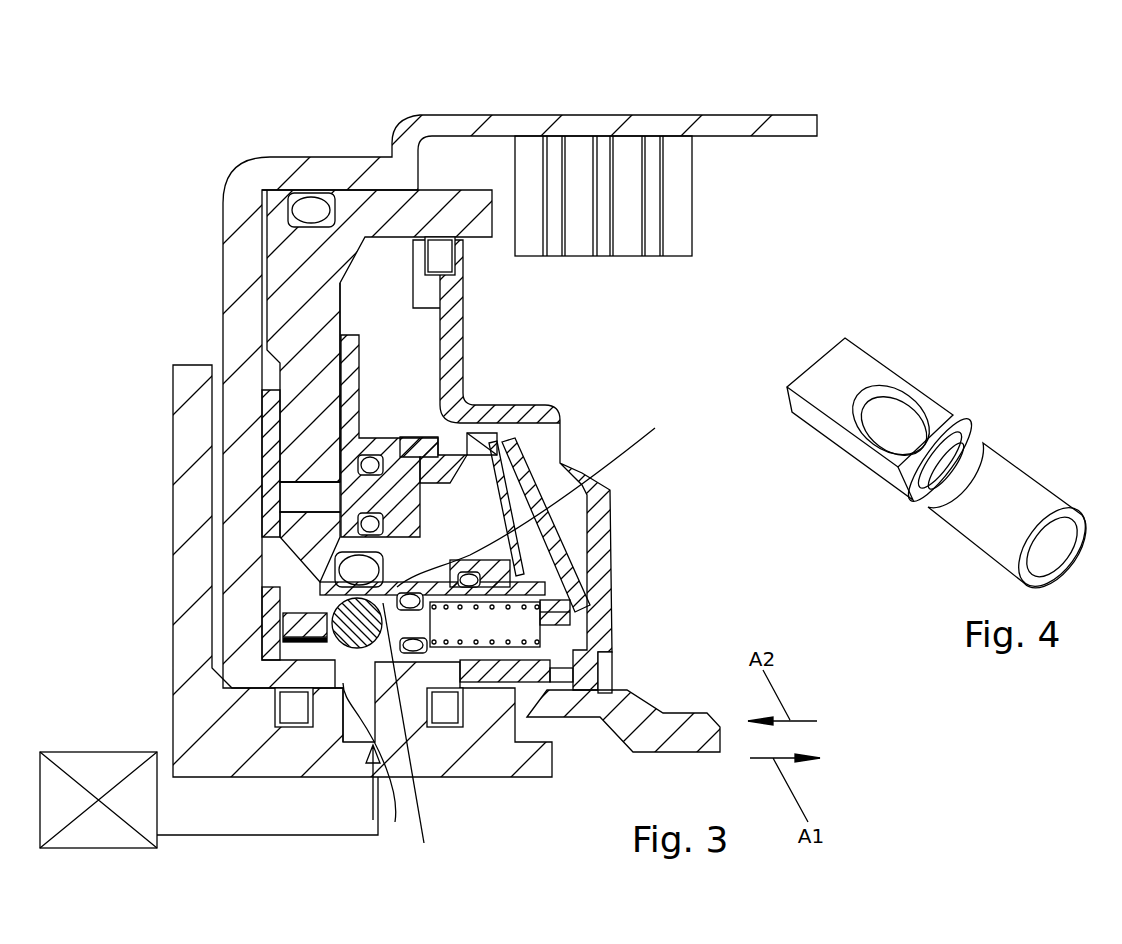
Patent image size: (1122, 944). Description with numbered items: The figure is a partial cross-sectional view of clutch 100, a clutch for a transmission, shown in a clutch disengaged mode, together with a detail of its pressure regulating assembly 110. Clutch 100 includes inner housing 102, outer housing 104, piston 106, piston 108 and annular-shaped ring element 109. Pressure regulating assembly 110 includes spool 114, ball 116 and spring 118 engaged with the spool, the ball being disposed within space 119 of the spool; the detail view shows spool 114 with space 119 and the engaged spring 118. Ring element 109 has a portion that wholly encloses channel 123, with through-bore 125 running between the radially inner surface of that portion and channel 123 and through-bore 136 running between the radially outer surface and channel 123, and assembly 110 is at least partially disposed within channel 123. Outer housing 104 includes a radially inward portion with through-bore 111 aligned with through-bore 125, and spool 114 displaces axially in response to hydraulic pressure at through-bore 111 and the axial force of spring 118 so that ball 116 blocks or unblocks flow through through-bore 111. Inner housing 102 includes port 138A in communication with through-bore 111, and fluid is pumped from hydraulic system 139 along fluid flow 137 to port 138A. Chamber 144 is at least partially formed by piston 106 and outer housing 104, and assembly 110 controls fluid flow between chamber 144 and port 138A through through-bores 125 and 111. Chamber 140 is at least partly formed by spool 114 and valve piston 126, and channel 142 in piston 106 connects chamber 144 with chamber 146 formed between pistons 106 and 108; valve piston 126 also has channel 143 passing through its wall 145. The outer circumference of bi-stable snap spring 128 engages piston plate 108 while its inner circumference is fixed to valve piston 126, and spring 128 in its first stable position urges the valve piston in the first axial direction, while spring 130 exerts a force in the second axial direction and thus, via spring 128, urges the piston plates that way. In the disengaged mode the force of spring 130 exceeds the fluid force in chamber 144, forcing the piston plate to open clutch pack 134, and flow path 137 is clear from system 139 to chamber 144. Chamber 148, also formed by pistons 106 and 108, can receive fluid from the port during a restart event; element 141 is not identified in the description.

In FIG. 3, the clutch 100 is at (156, 186).
In FIG. 3, the inner housing 102 is at (183, 593).
In FIG. 3, the outer housing 104 is at (235, 330).
In FIG. 3, the piston 106 is at (300, 250).
In FIG. 3, the piston 108 is at (481, 436).
In FIG. 3, the annular-shaped ring element 109 is at (515, 663).
In FIG. 4, the pressure regulating assembly 110 is at (1000, 355).
In FIG. 3, the through-bore 111 is at (376, 764).
In FIG. 3, the spool 114 is at (498, 602).
In FIG. 4, the spool 114 is at (858, 465).
In FIG. 3, the ball 116 is at (339, 645).
In FIG. 3, the spring 118 is at (503, 650).
In FIG. 4, the space 119 is at (928, 408).
In FIG. 3, the channel 123 is at (572, 500).
In FIG. 3, the through-bore 125 is at (417, 735).
In FIG. 3, the valve piston 126 is at (548, 598).
In FIG. 3, the bi-stable snap spring 128 is at (511, 452).
In FIG. 3, the spring 130 is at (560, 475).
In FIG. 3, the clutch pack 134 is at (695, 200).
In FIG. 3, the through-bore 136 is at (297, 593).
In FIG. 3, the fluid flow 137 is at (232, 835).
In FIG. 3, the port 138A is at (357, 763).
In FIG. 3, the hydraulic system 139 is at (127, 752).
In FIG. 3, the chamber 140 is at (520, 628).
In FIG. 3, the seal 141 is at (307, 639).
In FIG. 3, the channel 142 is at (297, 493).
In FIG. 3, the channel 143 is at (553, 622).
In FIG. 3, the chamber 144 is at (267, 508).
In FIG. 3, the wall 145 is at (547, 617).
In FIG. 3, the chamber 146 is at (335, 448).
In FIG. 3, the chamber 148 is at (542, 496).